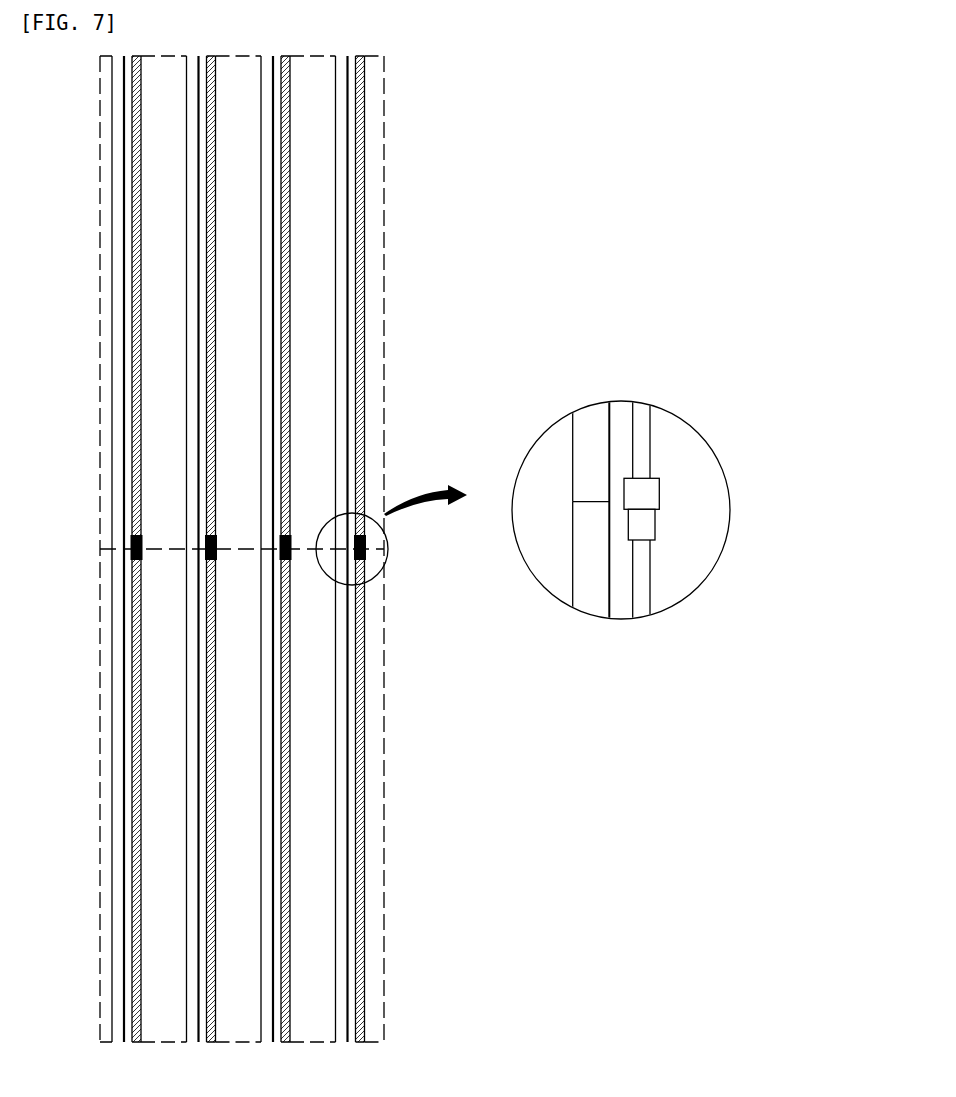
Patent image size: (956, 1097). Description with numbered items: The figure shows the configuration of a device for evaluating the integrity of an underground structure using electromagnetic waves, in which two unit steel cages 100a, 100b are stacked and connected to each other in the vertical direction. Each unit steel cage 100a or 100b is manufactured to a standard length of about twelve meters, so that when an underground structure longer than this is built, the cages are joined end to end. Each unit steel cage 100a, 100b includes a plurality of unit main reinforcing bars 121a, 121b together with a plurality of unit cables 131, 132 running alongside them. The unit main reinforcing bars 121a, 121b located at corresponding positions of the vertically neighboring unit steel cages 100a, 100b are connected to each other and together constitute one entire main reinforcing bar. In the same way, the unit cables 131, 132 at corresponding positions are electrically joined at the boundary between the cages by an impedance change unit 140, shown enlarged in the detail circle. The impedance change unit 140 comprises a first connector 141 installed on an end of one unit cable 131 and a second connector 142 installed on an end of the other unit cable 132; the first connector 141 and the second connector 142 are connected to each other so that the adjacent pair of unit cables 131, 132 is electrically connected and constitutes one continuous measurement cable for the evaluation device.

The unit steel cage 100a is at (89, 57).
The unit steel cage 100b is at (89, 553).
The unit main reinforcing bar 121a is at (576, 430).
The unit main reinforcing bar 121b is at (590, 590).
The unit cable 131 is at (647, 427).
The unit cable 132 is at (647, 581).
The impedance change unit 140 is at (797, 475).
The first connector 141 is at (659, 492).
The second connector 142 is at (657, 522).